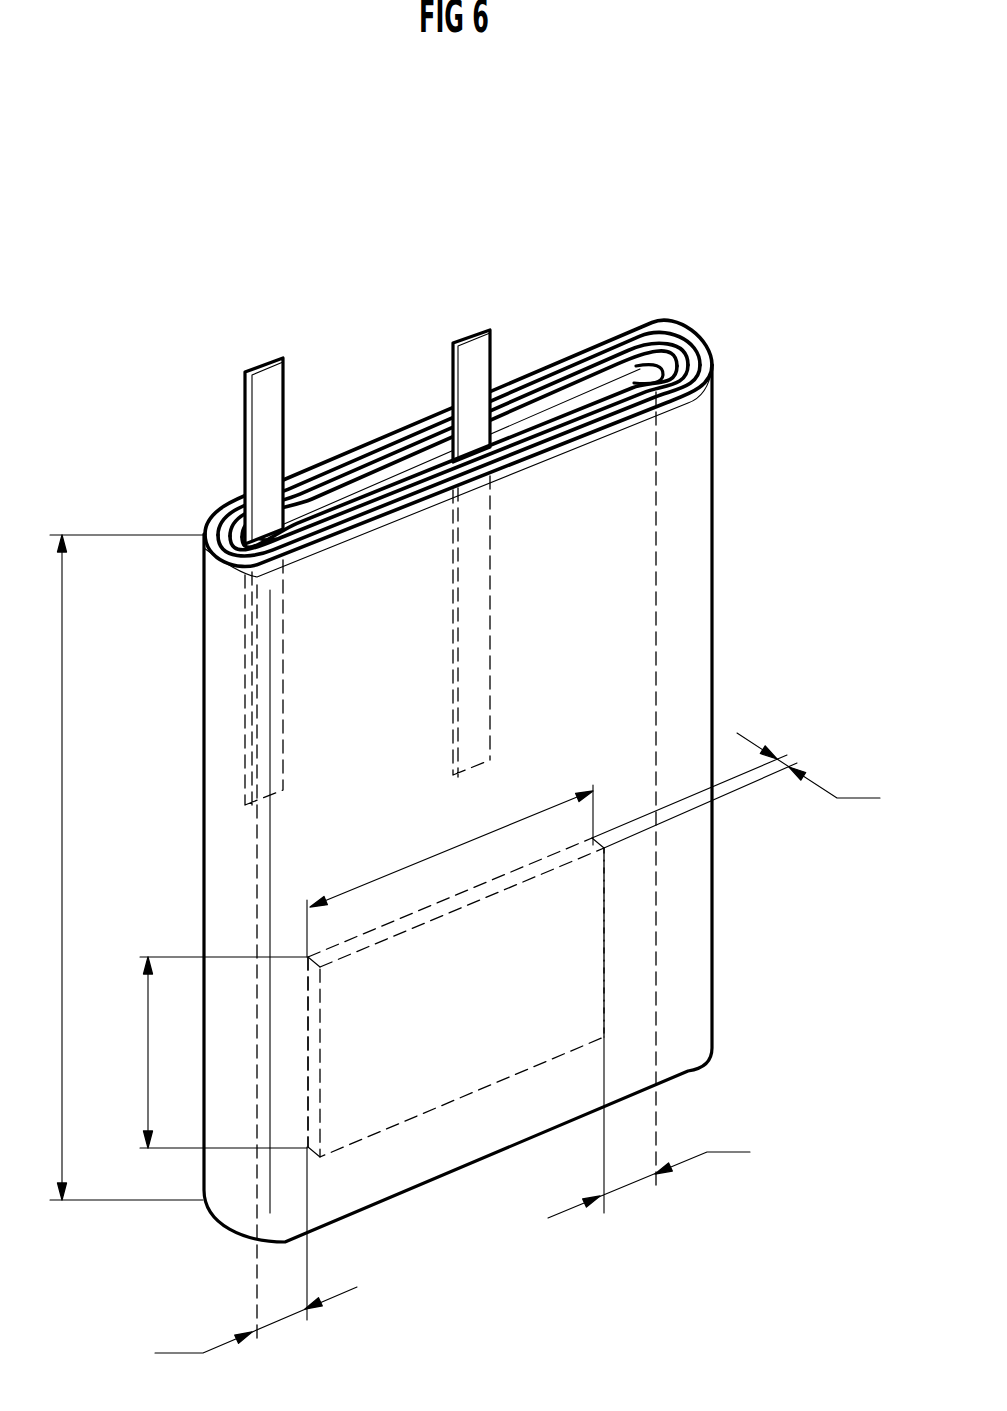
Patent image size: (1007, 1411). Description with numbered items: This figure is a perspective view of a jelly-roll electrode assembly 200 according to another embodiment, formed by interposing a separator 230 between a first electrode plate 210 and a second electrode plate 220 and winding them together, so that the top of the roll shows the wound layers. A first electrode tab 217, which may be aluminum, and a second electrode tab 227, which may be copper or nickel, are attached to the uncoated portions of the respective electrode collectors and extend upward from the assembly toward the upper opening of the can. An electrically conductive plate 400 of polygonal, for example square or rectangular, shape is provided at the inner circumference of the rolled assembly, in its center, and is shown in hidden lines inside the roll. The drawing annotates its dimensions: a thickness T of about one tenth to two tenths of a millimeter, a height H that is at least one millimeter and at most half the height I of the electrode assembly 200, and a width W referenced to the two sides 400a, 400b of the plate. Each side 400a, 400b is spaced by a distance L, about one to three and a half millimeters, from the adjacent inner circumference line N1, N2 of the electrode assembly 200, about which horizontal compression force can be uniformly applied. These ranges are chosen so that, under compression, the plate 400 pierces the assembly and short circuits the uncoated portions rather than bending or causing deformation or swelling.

The electrode assembly 200 is at (476, 752).
The first electrode plate 210 is at (713, 360).
The second electrode plate 220 is at (490, 367).
The separator 230 is at (687, 347).
The first electrode tab 217 is at (267, 403).
The second electrode tab 227 is at (470, 370).
The electrically conductive plate 400 is at (481, 1086).
The side of the electrically conductive plate 400a is at (211, 1117).
The side of the electrically conductive plate 400b is at (603, 900).
The inner circumference line N1 is at (262, 862).
The inner circumference line N2 is at (664, 635).
The height of the electrode assembly I is at (119, 867).
The height of the electrically conductive plate H is at (209, 1052).
The width of the electrically conductive plate W is at (450, 871).
The thickness of the electrically conductive plate T is at (736, 790).
The distance L is at (452, 1195).